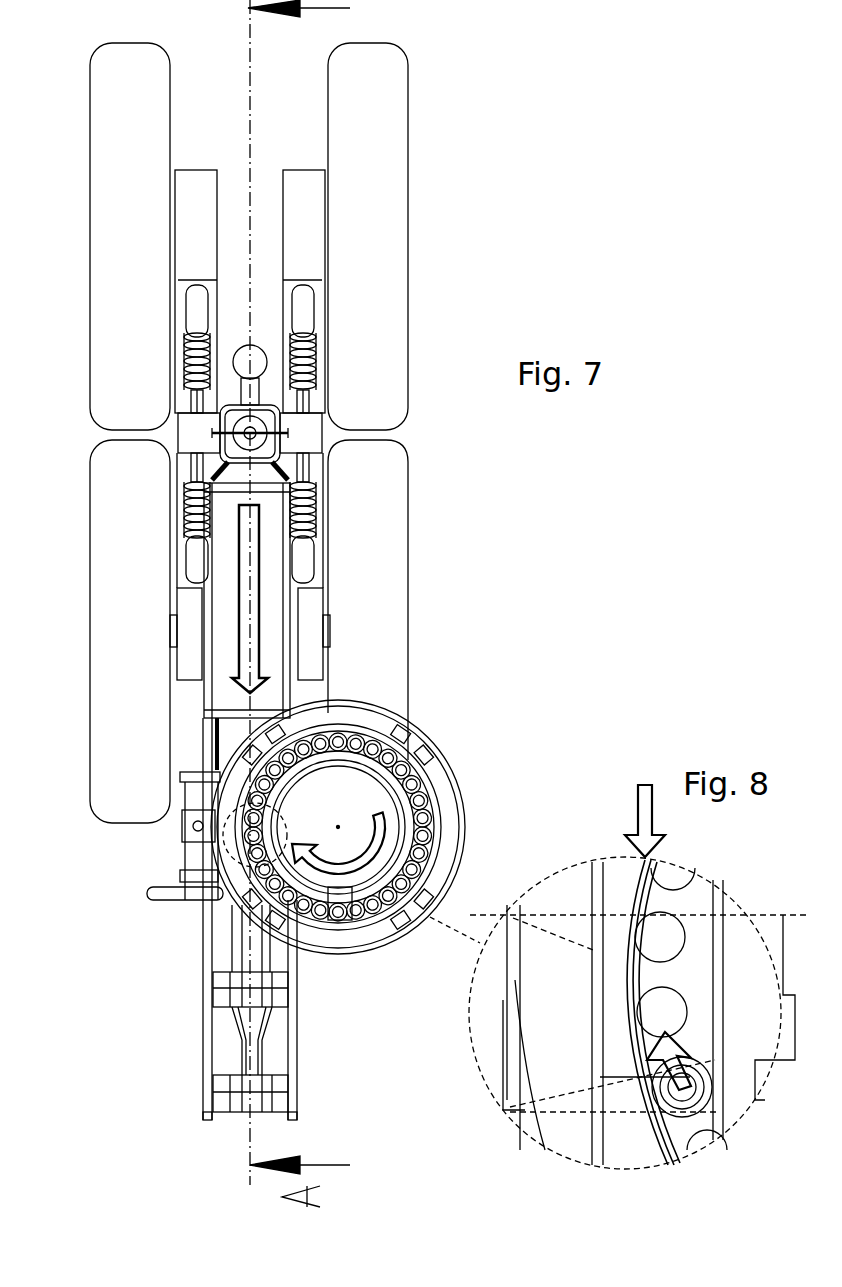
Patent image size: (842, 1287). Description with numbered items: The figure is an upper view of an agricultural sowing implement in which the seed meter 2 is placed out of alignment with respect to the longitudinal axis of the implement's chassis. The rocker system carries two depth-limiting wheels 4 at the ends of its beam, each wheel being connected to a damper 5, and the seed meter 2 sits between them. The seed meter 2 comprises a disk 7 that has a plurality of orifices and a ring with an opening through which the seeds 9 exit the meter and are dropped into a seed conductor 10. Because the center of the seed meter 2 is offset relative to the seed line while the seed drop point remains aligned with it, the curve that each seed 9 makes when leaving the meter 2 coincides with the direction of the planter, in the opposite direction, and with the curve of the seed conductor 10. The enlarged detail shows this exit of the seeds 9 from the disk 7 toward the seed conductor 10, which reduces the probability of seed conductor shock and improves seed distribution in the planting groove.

In FIG. 7, the seed meter 2 is at (357, 940).
In FIG. 7, the depth-limiting wheels 4 is at (373, 242).
In FIG. 7, the damper 5 is at (300, 312).
In FIG. 7, the disk 7 is at (360, 900).
In FIG. 8, the disk 7 is at (740, 967).
In FIG. 7, the seeds 9 is at (250, 857).
In FIG. 8, the seeds 9 is at (678, 1093).
In FIG. 7, the seed conductor 10 is at (218, 812).
In FIG. 8, the seed conductor 10 is at (585, 913).